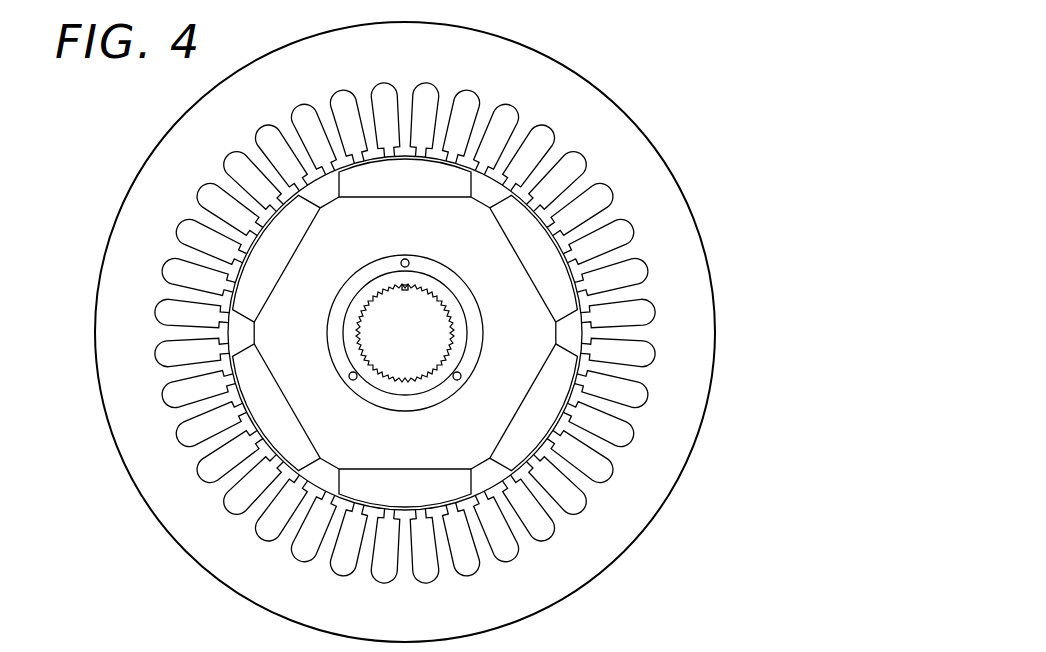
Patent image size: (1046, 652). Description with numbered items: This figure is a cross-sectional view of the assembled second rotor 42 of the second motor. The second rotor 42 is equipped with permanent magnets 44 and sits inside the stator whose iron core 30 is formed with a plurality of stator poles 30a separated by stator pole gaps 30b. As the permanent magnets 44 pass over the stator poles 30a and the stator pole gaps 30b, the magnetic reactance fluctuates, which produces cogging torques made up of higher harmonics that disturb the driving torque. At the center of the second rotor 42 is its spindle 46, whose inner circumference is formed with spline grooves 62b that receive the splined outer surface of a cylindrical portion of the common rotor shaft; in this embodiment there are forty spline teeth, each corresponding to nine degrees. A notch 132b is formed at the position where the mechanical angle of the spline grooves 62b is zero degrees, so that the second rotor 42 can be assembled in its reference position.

The iron core 30 is at (590, 117).
The stator poles 30a is at (568, 433).
The stator pole gaps 30b is at (558, 503).
The second rotor 42 is at (520, 348).
The permanent magnets 44 is at (453, 175).
The spindle 46 is at (452, 315).
The spline grooves 62b is at (360, 337).
The notch 132b is at (403, 288).